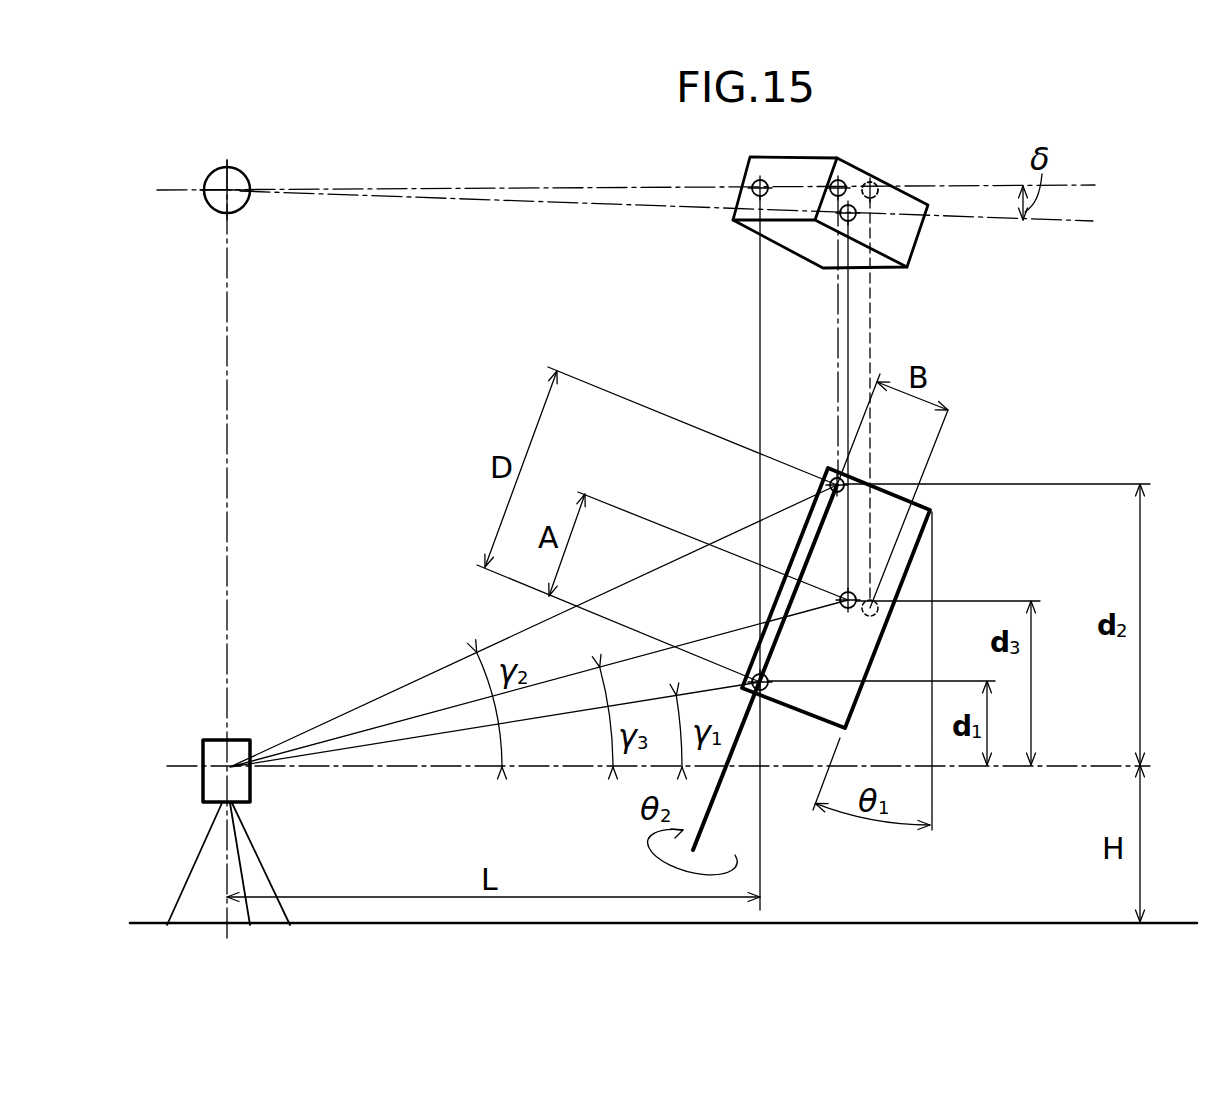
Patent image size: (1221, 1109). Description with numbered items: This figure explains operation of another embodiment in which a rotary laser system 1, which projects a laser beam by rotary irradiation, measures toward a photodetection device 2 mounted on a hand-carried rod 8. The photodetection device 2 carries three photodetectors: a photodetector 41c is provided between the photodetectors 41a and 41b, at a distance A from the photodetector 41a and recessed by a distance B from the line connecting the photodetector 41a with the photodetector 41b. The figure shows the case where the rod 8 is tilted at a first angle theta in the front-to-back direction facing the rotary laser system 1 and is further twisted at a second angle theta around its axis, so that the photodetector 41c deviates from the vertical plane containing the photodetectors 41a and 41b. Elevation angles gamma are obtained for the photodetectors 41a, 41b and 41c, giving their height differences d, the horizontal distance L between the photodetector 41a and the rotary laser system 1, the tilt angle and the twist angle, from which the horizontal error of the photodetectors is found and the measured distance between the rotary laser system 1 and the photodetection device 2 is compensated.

The rotary laser system 1 is at (245, 211).
The photodetection device 2 is at (857, 168).
The rod 8 is at (717, 792).
The photodetector 41a is at (767, 690).
The photodetector 41b is at (832, 482).
The photodetector 41c is at (855, 594).